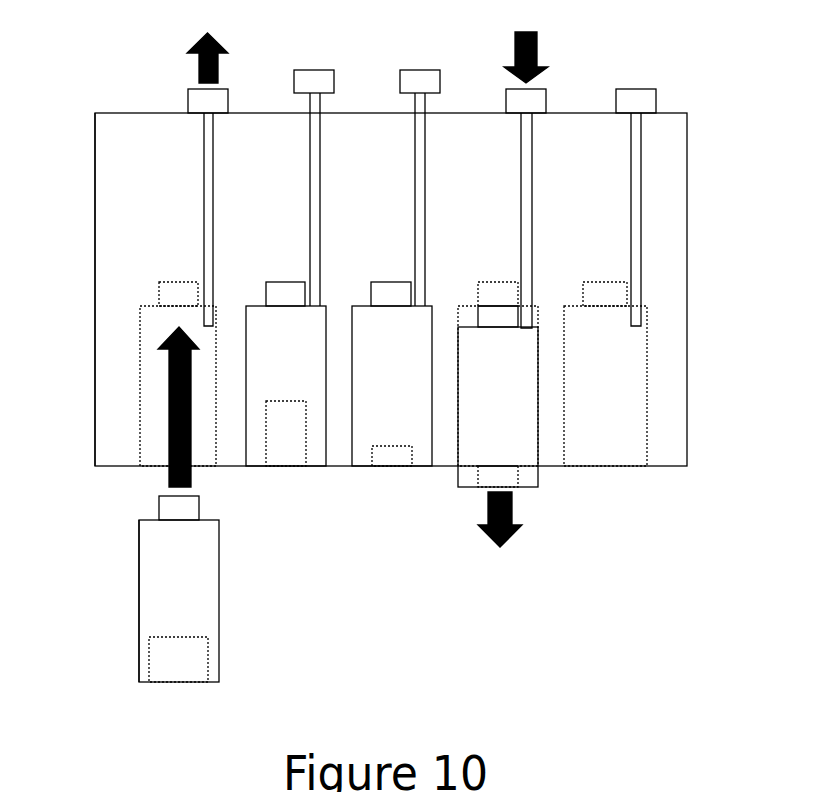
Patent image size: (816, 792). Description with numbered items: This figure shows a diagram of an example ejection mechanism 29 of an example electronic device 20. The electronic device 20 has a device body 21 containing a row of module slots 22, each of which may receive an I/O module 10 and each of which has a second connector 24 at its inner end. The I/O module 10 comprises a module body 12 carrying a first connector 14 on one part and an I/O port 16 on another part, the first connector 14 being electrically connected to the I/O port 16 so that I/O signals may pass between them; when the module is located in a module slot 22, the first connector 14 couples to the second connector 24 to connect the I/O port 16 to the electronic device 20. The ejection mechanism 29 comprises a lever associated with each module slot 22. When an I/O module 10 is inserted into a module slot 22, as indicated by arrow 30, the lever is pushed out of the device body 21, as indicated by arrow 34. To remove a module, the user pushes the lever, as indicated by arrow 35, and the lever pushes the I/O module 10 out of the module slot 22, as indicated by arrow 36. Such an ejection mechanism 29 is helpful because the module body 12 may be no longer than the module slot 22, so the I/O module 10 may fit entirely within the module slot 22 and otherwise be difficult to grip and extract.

The I/O module 10 is at (140, 558).
The module body 12 is at (150, 607).
The first connector 14 is at (165, 503).
The I/O port 16 is at (163, 657).
The electronic device 20 is at (95, 137).
The device body 21 is at (120, 218).
The module slot 22 is at (152, 386).
The second connector 24 is at (160, 300).
The ejection mechanism 29 is at (650, 100).
The arrow indicating module insertion 30 is at (168, 432).
The arrow indicating lever being pushed out 34 is at (198, 62).
The arrow indicating lever actuation 35 is at (546, 32).
The arrow indicating module ejection 36 is at (512, 508).